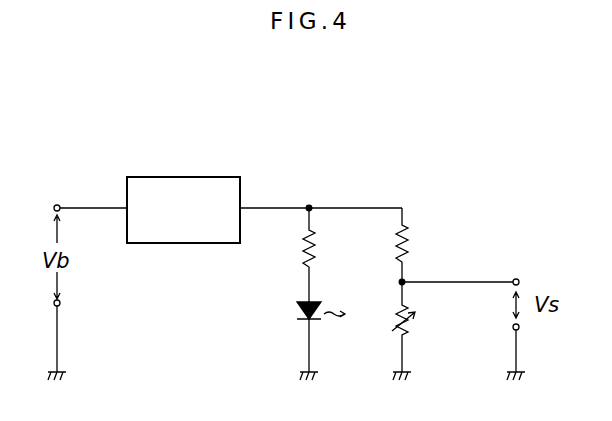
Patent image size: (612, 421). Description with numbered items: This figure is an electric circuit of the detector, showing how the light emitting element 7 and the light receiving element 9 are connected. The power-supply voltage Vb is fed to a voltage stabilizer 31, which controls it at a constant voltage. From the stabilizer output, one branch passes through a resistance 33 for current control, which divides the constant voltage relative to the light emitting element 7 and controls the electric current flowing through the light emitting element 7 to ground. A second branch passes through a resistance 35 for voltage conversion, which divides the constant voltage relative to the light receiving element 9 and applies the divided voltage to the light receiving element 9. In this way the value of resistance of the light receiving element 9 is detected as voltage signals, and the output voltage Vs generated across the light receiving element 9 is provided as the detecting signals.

The voltage stabilizer 31 is at (158, 177).
The resistance for current control 33 is at (317, 250).
The light emitting element 7 is at (293, 320).
The resistance for voltage conversion 35 is at (410, 248).
The light receiving element 9 is at (414, 326).